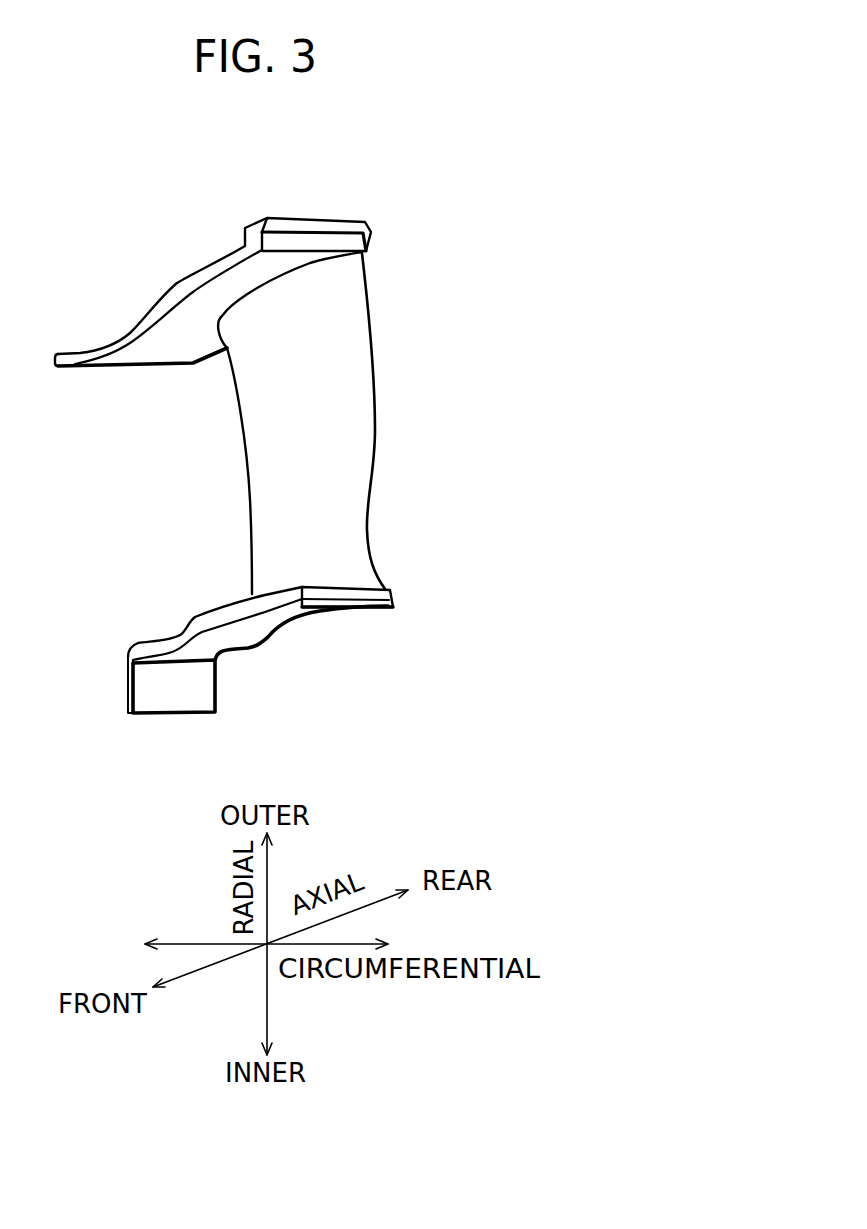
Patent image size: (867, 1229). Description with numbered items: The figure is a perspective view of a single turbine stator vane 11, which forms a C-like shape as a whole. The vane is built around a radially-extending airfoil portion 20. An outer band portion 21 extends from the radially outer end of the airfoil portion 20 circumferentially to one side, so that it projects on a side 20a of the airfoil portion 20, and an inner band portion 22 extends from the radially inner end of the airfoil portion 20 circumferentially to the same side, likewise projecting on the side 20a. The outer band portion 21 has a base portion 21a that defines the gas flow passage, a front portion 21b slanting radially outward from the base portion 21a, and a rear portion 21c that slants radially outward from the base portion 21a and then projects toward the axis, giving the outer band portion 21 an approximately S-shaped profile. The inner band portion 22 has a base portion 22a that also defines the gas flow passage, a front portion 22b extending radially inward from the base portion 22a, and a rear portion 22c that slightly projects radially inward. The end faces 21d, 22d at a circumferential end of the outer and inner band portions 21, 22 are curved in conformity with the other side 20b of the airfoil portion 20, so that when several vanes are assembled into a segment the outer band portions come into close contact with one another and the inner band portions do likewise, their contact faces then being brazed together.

The turbine stator vane 11 is at (390, 216).
The airfoil portion 20 is at (247, 543).
The side of the airfoil portion 20a is at (275, 470).
The side of the airfoil portion 20b is at (377, 427).
The outer band portion 21 is at (138, 373).
The base portion 21a is at (173, 353).
The front portion 21b is at (68, 352).
The rear portion 21c is at (311, 227).
The end face 21d is at (167, 297).
The inner band portion 22 is at (158, 633).
The base portion 22a is at (237, 640).
The front portion 22b is at (170, 713).
The rear portion 22c is at (348, 596).
The end face 22d is at (197, 620).